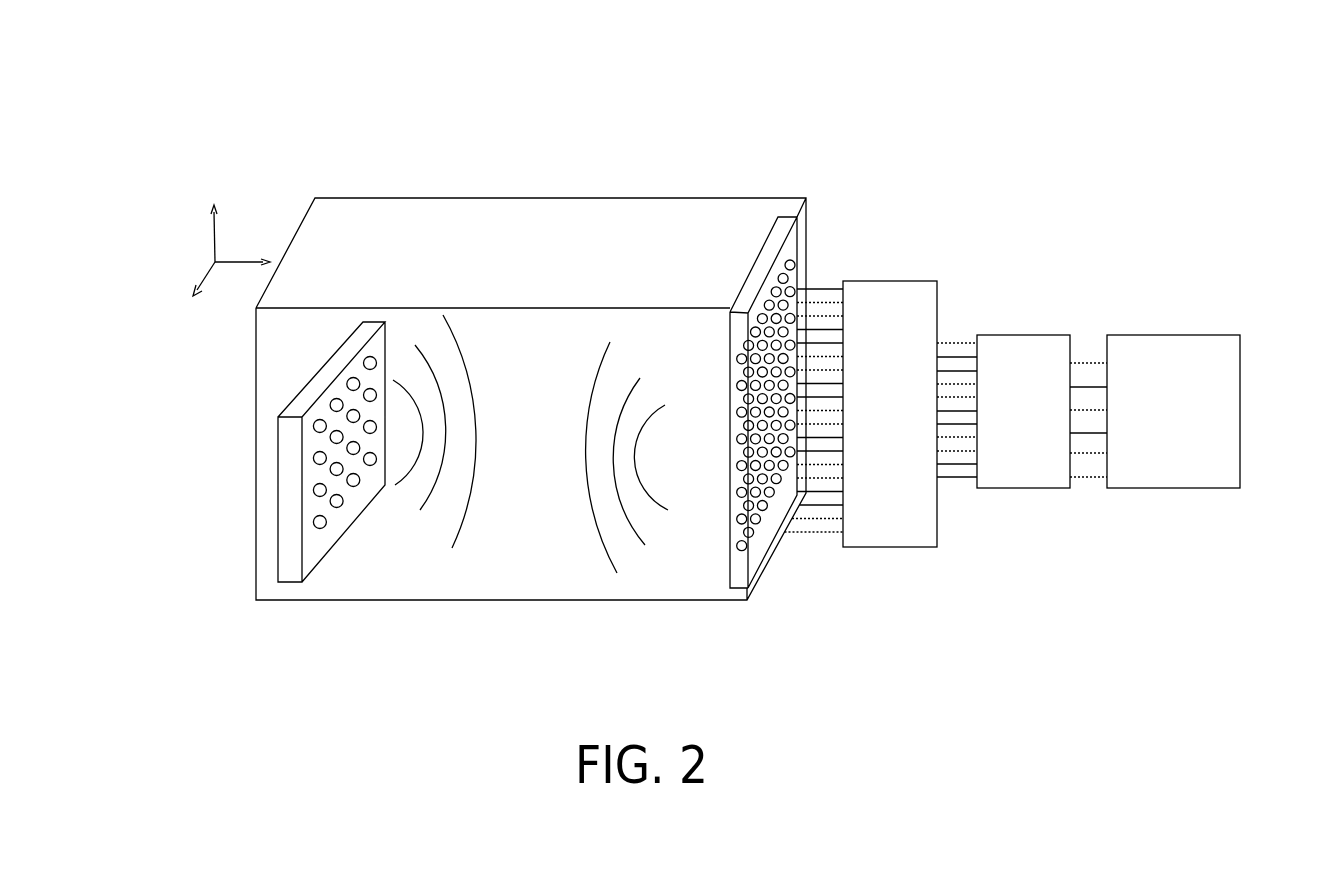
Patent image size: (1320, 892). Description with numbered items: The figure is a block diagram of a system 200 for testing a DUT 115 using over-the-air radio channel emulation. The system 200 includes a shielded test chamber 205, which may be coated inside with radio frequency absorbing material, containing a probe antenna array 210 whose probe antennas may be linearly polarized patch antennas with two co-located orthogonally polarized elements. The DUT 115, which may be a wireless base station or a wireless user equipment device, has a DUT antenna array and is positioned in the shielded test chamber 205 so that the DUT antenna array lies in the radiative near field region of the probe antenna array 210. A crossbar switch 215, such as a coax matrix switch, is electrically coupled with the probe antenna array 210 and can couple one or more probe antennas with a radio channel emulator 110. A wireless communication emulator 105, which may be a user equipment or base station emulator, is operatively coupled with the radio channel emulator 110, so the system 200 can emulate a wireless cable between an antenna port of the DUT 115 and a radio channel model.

The system 200 is at (305, 84).
The shielded test chamber 205 is at (425, 197).
The probe antenna array 210 is at (778, 217).
The crossbar switch 215 is at (890, 280).
The radio channel emulator 110 is at (1000, 334).
The wireless communication emulator 105 is at (1140, 334).
The DUT 115 is at (320, 368).